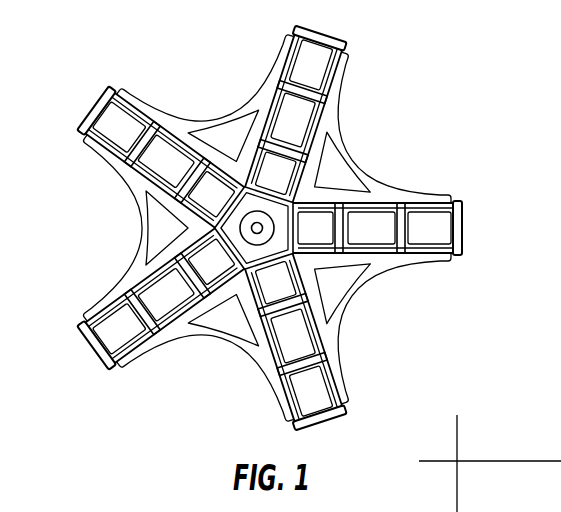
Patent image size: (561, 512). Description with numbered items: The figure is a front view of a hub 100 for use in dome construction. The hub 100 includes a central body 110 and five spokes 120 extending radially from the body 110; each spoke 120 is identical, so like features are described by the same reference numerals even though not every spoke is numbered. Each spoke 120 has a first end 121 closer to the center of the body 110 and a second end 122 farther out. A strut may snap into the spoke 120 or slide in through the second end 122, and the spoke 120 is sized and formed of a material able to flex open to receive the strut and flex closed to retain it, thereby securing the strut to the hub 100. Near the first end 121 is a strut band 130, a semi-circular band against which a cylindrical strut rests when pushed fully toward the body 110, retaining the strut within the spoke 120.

The hub 100 is at (124, 42).
The body 110 is at (256, 200).
The spoke 120 is at (414, 236).
The first end 121 is at (308, 220).
The second end 122 is at (461, 237).
The strut band 130 is at (213, 262).